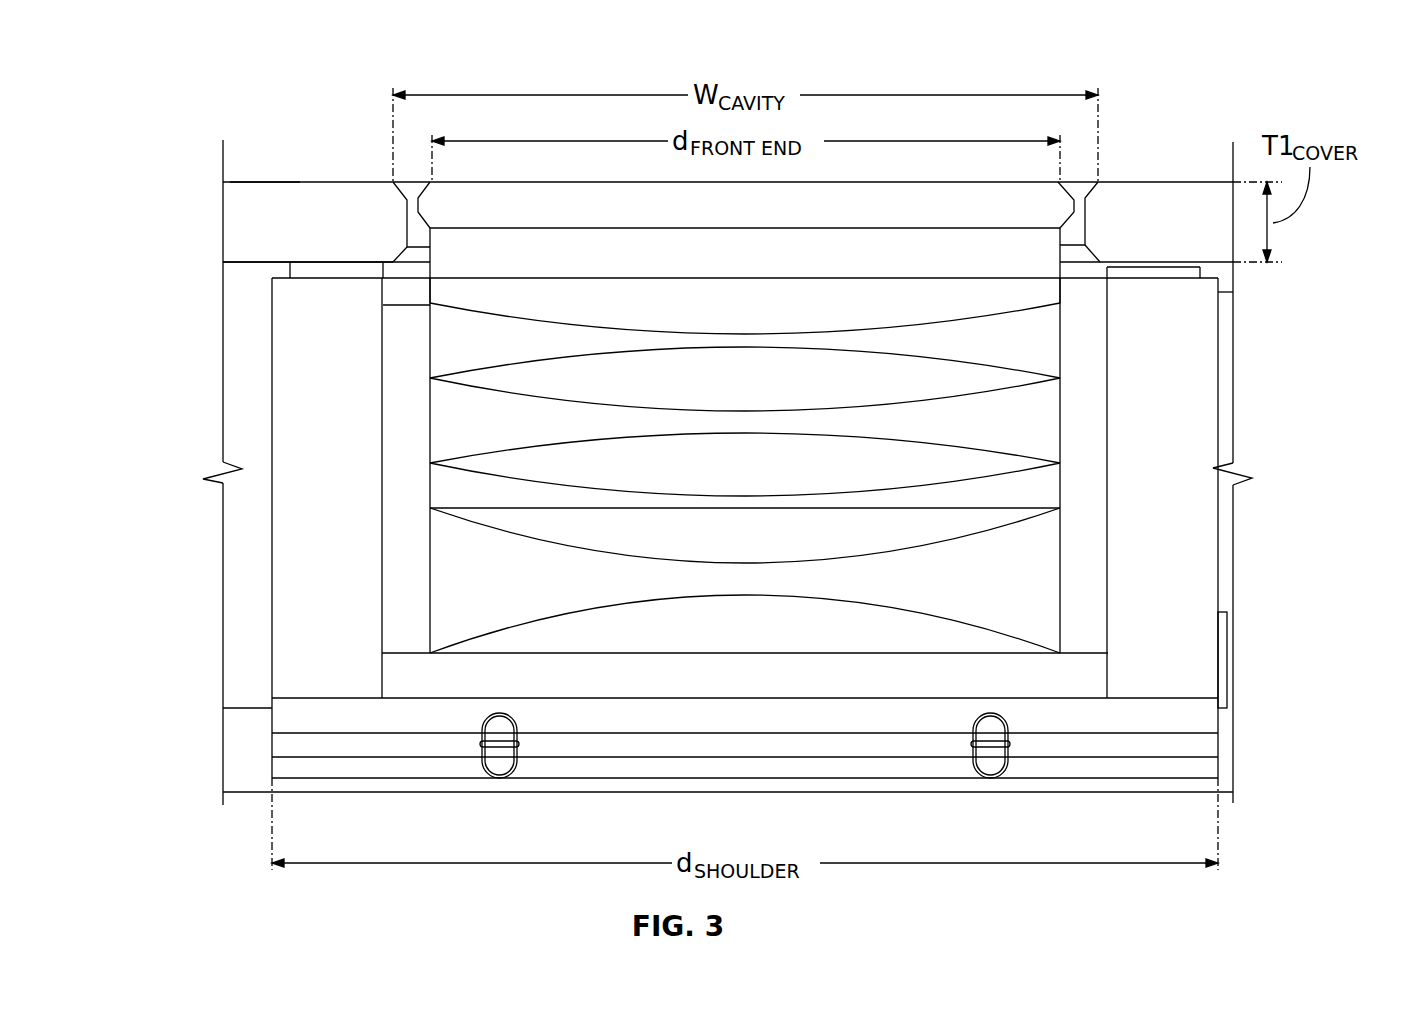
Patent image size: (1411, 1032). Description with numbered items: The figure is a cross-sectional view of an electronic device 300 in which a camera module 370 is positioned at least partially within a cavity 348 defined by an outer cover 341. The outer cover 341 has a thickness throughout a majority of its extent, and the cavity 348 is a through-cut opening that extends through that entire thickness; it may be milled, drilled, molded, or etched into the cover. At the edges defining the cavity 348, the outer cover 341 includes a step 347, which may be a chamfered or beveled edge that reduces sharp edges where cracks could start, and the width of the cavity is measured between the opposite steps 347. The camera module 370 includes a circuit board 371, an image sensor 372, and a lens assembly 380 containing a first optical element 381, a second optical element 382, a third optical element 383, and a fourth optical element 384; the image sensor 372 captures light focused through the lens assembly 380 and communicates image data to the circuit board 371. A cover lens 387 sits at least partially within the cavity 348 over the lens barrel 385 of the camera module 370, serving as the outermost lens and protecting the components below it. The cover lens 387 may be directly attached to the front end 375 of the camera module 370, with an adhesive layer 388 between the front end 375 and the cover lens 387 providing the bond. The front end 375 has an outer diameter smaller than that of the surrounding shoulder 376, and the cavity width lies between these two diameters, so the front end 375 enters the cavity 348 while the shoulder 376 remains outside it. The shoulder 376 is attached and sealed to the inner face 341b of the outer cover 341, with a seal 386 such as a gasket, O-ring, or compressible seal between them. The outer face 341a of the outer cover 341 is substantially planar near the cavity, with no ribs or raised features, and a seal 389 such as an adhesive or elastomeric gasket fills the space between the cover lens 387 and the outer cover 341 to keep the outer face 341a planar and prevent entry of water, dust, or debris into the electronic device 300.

The electronic device 300 is at (1265, 50).
The outer cover 341 is at (1208, 178).
The outer face 341a is at (252, 180).
The inner face 341b is at (240, 262).
The step 347 is at (397, 253).
The cavity 348 is at (1085, 222).
The camera module 370 is at (1258, 727).
The circuit board 371 is at (272, 742).
The image sensor 372 is at (572, 757).
The front end 375 is at (373, 262).
The shoulder 376 is at (1190, 281).
The lens assembly 380 is at (1223, 413).
The first optical element 381 is at (272, 715).
The second optical element 382 is at (430, 572).
The third optical element 383 is at (430, 463).
The fourth optical element 384 is at (430, 378).
The lens barrel 385 is at (430, 294).
The seal 386 is at (1203, 270).
The cover lens 387 is at (853, 182).
The adhesive layer 388 is at (997, 227).
The seal 389 is at (1075, 178).